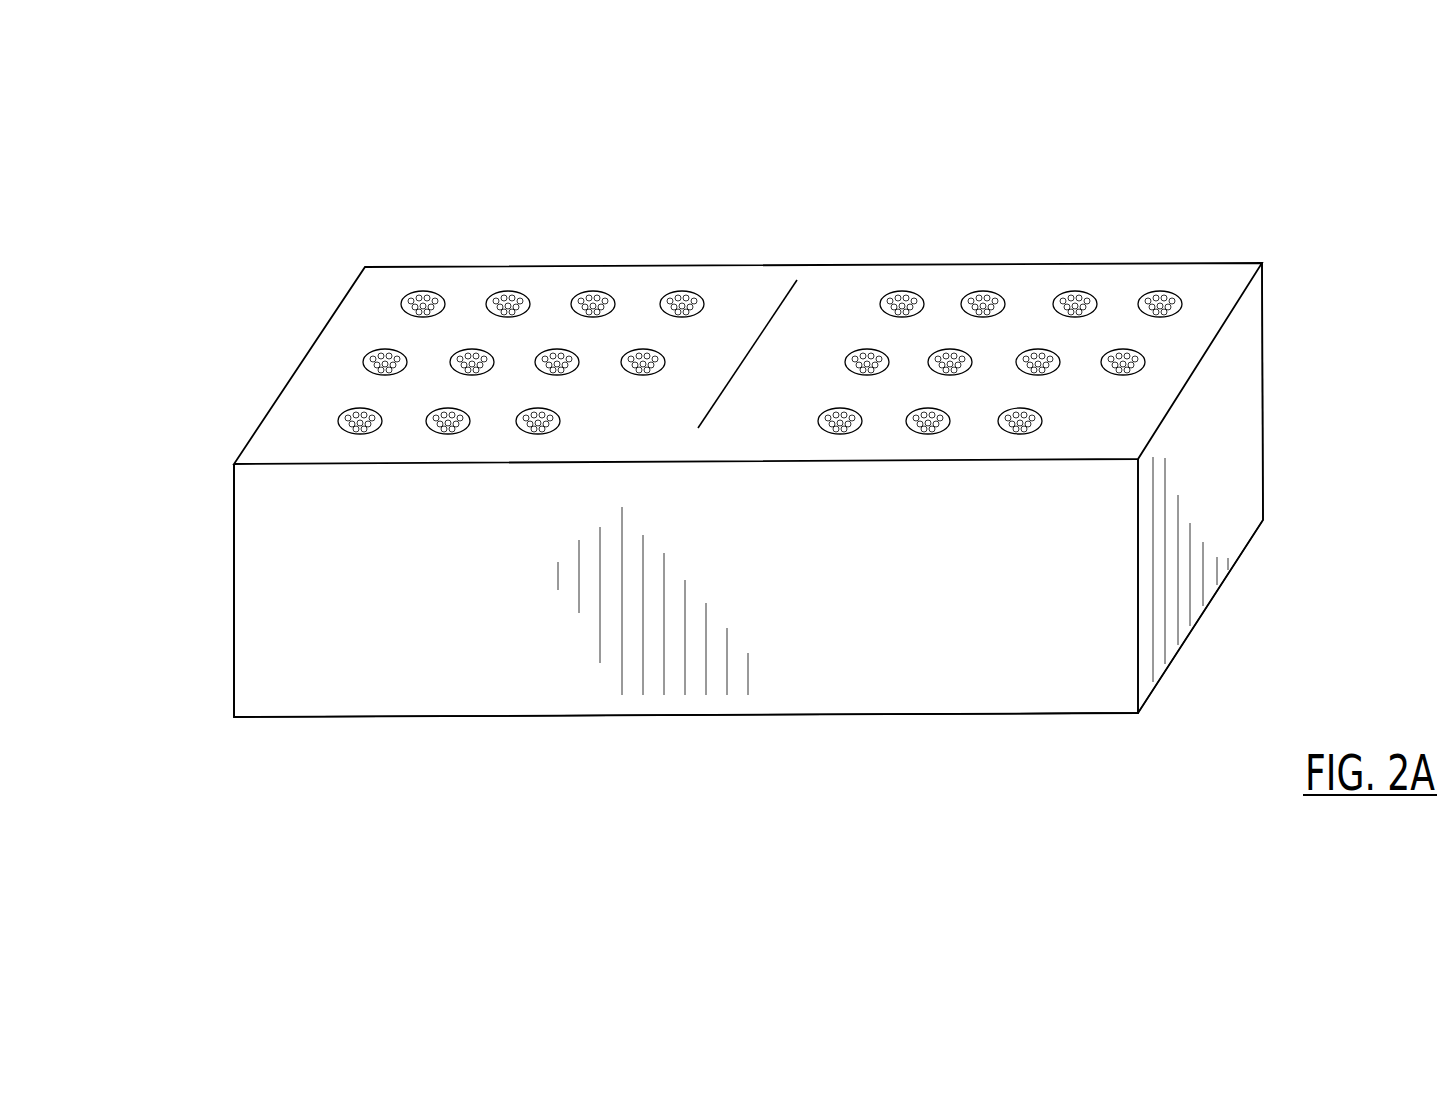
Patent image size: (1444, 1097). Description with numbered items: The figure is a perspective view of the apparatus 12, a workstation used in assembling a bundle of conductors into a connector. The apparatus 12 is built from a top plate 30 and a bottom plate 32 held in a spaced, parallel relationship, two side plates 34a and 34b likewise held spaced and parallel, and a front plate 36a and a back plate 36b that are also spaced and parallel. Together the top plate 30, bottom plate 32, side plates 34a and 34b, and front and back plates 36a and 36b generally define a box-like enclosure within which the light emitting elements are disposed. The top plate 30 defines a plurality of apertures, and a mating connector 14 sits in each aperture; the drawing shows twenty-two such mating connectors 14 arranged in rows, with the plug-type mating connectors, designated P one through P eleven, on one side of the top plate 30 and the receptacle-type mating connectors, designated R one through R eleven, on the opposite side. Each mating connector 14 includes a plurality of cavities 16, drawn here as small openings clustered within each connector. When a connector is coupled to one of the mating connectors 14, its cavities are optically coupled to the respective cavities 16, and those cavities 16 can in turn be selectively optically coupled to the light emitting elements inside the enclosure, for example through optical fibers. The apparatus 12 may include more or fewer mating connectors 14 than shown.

The apparatus 12 is at (690, 114).
The mating connectors 14 is at (443, 297).
The cavities 16 is at (418, 303).
The top plate 30 is at (928, 277).
The bottom plate 32 is at (463, 717).
The side plate 34a is at (234, 553).
The side plate 34b is at (1200, 563).
The front plate 36a is at (805, 655).
The back plate 36b is at (1263, 313).